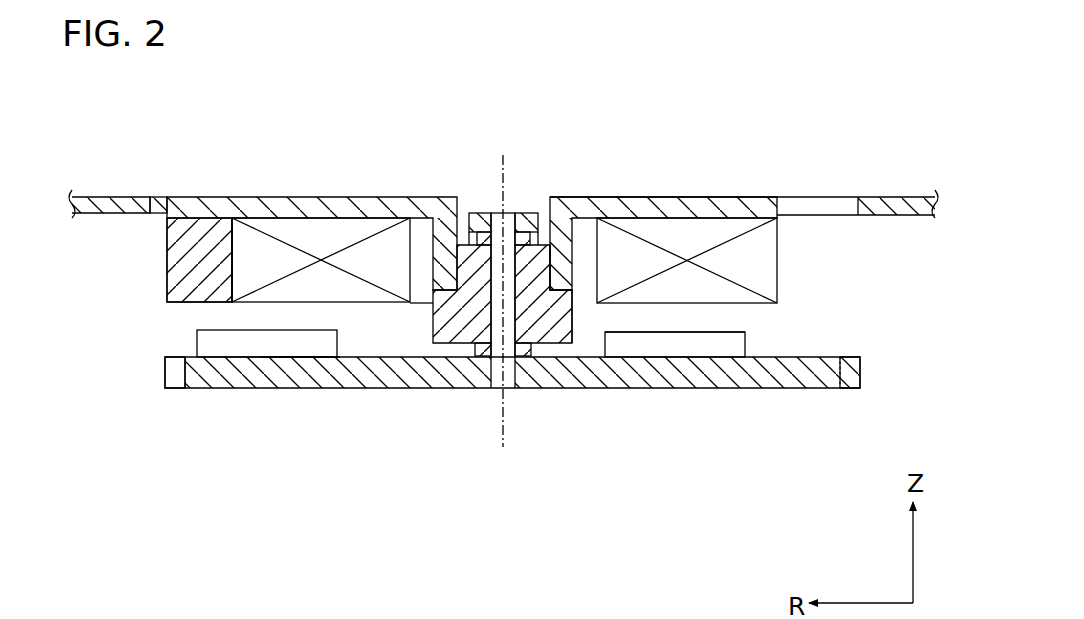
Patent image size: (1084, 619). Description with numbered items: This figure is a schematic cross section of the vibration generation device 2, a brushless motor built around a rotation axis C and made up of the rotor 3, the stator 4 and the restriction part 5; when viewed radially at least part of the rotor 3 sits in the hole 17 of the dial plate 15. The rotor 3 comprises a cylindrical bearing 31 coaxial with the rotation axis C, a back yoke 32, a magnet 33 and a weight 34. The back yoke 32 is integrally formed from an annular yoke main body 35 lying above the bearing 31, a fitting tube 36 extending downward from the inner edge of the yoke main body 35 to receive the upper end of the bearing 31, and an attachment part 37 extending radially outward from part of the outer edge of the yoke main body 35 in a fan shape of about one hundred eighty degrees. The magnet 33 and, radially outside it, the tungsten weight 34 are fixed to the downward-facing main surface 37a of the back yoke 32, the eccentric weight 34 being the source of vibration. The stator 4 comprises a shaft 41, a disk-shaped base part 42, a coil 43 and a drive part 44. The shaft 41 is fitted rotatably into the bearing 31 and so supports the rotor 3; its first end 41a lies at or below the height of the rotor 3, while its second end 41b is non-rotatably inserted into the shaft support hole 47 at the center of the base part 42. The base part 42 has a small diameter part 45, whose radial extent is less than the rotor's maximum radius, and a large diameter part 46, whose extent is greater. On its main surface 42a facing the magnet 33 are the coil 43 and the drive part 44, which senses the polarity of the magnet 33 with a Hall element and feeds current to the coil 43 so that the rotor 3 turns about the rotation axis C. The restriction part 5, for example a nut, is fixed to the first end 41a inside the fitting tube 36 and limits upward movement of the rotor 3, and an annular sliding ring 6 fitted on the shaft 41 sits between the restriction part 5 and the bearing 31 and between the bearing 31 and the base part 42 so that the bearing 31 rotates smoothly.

The vibration generation device 2 is at (685, 193).
The rotor 3 is at (786, 258).
The stator 4 is at (754, 343).
The restriction part 5 is at (478, 215).
The sliding ring 6 is at (528, 232).
The dial plate 15 is at (108, 202).
The hole 17 is at (162, 197).
The bearing 31 is at (567, 318).
The back yoke 32 is at (749, 195).
The magnet 33 is at (237, 258).
The weight 34 is at (175, 238).
The yoke main body 35 is at (717, 203).
The fitting tube 36 is at (567, 260).
The attachment part 37 is at (198, 203).
The main surface 37a is at (227, 214).
The shaft 41 is at (497, 352).
The first end 41a is at (498, 213).
The second end 41b is at (495, 392).
The base part 42 is at (267, 390).
The main surface 42a is at (293, 352).
The coil 43 is at (203, 343).
The drive part 44 is at (677, 352).
The small diameter part 45 is at (183, 373).
The large diameter part 46 is at (850, 380).
The shaft support hole 47 is at (523, 354).
The rotation axis C is at (503, 316).